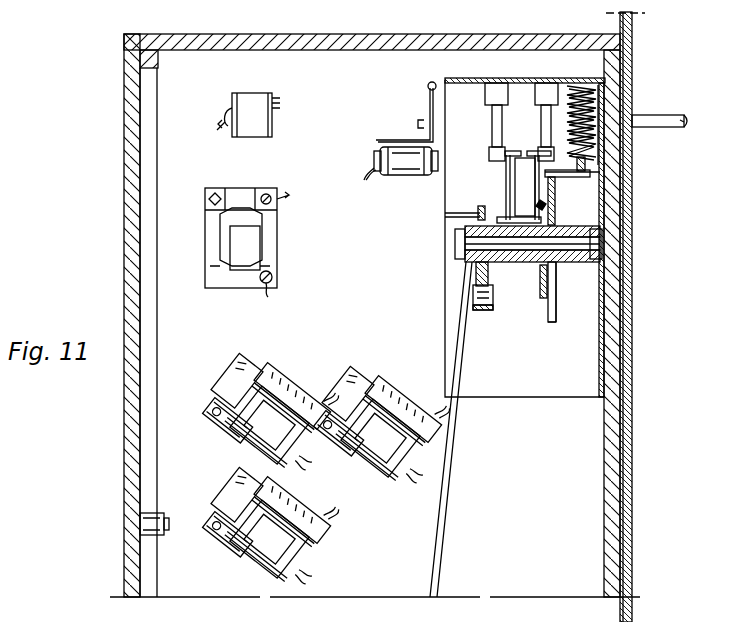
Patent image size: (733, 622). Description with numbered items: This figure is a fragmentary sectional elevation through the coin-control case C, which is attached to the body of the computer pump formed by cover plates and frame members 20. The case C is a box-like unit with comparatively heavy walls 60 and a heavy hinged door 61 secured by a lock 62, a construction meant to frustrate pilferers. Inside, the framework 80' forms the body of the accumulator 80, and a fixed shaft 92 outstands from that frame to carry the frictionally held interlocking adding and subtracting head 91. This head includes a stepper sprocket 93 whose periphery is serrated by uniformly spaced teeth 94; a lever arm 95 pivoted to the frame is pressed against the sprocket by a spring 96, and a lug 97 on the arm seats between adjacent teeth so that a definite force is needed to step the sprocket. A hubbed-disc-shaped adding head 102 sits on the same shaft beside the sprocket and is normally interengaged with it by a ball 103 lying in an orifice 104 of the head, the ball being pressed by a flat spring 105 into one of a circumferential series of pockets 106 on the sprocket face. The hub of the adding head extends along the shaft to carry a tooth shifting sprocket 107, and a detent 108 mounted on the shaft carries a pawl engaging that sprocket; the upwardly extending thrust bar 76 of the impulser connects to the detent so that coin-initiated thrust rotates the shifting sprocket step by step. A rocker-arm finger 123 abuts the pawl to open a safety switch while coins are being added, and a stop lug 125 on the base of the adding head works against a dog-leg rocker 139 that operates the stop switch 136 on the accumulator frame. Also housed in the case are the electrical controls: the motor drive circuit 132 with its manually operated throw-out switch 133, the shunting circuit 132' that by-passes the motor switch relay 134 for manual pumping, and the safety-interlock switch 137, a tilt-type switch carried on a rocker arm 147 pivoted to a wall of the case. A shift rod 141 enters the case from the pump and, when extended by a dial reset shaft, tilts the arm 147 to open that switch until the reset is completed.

The cover plates and frame members 20 is at (628, 576).
The walls 60 is at (610, 531).
The door 61 is at (136, 432).
The lock 62 is at (162, 514).
The thrust bar 76 is at (438, 560).
The accumulator 80 is at (512, 247).
The framework 80' is at (554, 237).
The adding and subtracting head 91 is at (536, 314).
The fixed shaft 92 is at (598, 244).
The stepper sprocket 93 is at (556, 269).
The teeth 94 is at (554, 321).
The lever arm 95 is at (600, 171).
The spring 96 is at (590, 93).
The lug 97 is at (568, 178).
The adding head 102 is at (541, 285).
The ball 103 is at (526, 200).
The orifice 104 is at (552, 212).
The flat spring 105 is at (536, 203).
The pockets 106 is at (554, 296).
The tooth shifting sprocket 107 is at (458, 223).
The detent 108 is at (476, 278).
The finger 123 is at (472, 312).
The stop lug 125 is at (520, 237).
The motor drive circuit 132 is at (310, 88).
The shunting circuit 132' is at (312, 116).
The throw-out switch 133 is at (248, 115).
The motor switch relay 134 is at (246, 251).
The stop switch 136 is at (498, 121).
The safety-interlock switch 137 is at (400, 176).
The rocker 139 is at (506, 171).
The shift rod 141 is at (666, 120).
The rocker arm 147 is at (428, 109).
The case C is at (120, 233).